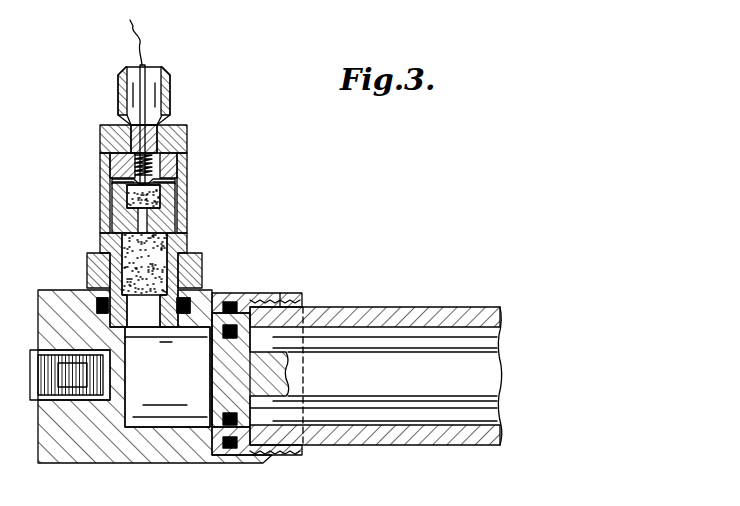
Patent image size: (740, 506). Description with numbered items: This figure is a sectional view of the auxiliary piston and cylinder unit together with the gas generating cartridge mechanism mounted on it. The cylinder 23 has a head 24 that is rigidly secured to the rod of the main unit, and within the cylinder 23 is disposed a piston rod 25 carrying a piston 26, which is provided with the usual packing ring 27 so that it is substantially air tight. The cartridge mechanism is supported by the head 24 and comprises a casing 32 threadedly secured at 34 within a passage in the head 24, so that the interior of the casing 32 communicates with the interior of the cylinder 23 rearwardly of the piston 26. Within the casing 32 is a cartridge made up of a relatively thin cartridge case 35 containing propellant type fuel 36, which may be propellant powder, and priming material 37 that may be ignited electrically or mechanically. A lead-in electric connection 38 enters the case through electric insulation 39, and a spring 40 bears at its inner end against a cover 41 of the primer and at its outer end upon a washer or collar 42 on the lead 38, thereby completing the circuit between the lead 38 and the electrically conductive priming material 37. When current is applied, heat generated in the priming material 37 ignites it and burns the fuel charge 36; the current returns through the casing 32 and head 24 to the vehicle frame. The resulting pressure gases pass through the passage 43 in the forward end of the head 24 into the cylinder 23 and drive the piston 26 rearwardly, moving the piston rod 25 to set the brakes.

The cylinder 23 is at (403, 315).
The head 24 is at (281, 295).
The piston rod 25 is at (450, 389).
The piston 26 is at (220, 392).
The packing ring 27 is at (230, 333).
The casing 32 is at (178, 232).
The threaded connection 34 is at (188, 266).
The cartridge case 35 is at (176, 195).
The propellant type fuel 36 is at (137, 267).
The priming material 37 is at (140, 198).
The lead-in electric connection 38 is at (146, 93).
The electric insulation 39 is at (173, 157).
The spring 40 is at (137, 160).
The cover 41 is at (120, 182).
The washer or collar 42 is at (111, 134).
The passage 43 is at (143, 317).